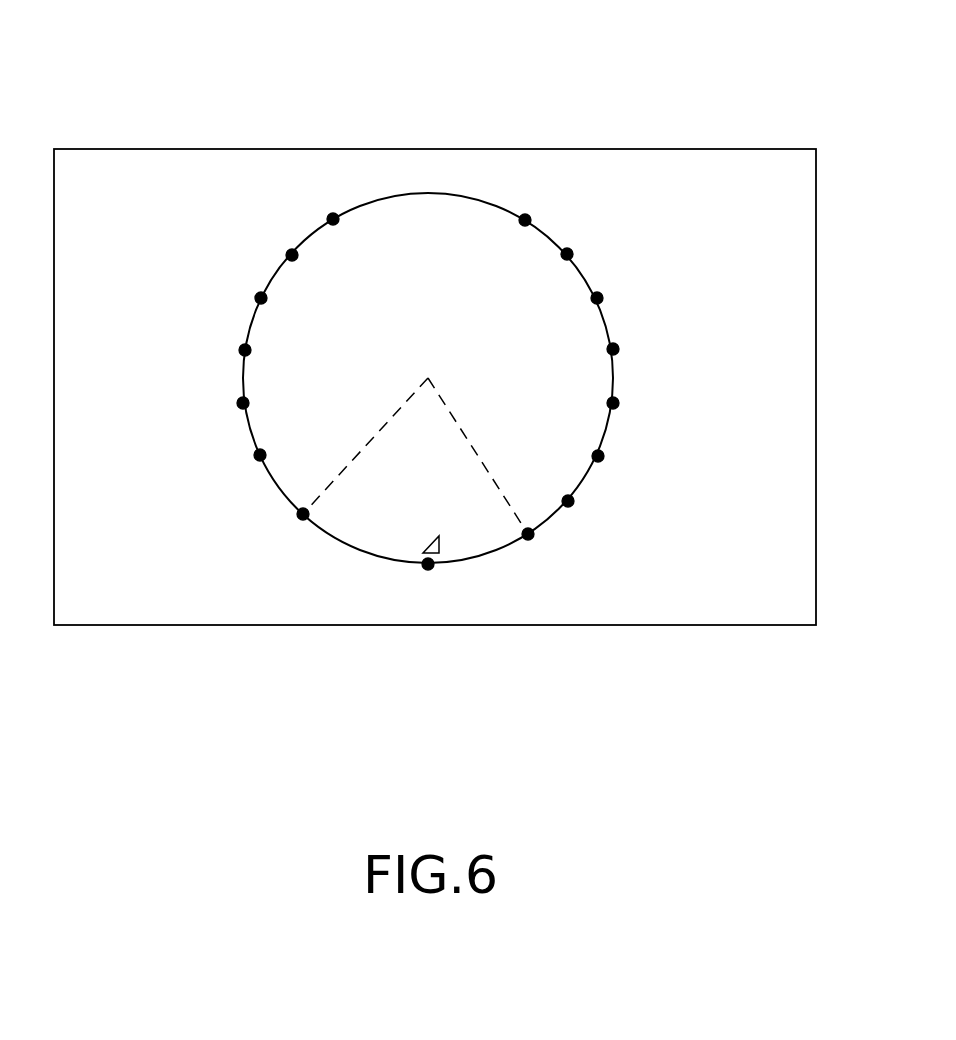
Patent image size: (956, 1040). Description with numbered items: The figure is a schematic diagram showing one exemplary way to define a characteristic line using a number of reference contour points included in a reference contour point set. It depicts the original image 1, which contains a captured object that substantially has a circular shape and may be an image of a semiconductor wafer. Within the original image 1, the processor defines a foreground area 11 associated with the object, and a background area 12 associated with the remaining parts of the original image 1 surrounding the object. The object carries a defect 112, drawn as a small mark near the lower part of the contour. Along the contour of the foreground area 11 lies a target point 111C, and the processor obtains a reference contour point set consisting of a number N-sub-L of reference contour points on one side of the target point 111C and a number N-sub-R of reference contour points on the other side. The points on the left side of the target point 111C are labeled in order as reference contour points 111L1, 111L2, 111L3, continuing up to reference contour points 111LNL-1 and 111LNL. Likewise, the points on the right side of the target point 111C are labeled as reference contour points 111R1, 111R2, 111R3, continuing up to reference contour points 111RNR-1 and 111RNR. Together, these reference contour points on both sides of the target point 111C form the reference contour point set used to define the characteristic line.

The original image 1 is at (490, 100).
The background area 12 is at (736, 162).
The foreground area 11 is at (587, 377).
The defect 112 is at (434, 540).
The target point 111C is at (428, 570).
The reference contour point 111L1 is at (303, 514).
The reference contour point 111L2 is at (260, 455).
The reference contour point 111L3 is at (243, 403).
The reference contour point 111LNL-1 is at (292, 255).
The reference contour point 111LNL is at (333, 219).
The reference contour point 111R1 is at (528, 534).
The reference contour point 111R2 is at (568, 501).
The reference contour point 111R3 is at (598, 456).
The reference contour point 111RNR-1 is at (567, 254).
The reference contour point 111RNR is at (525, 220).